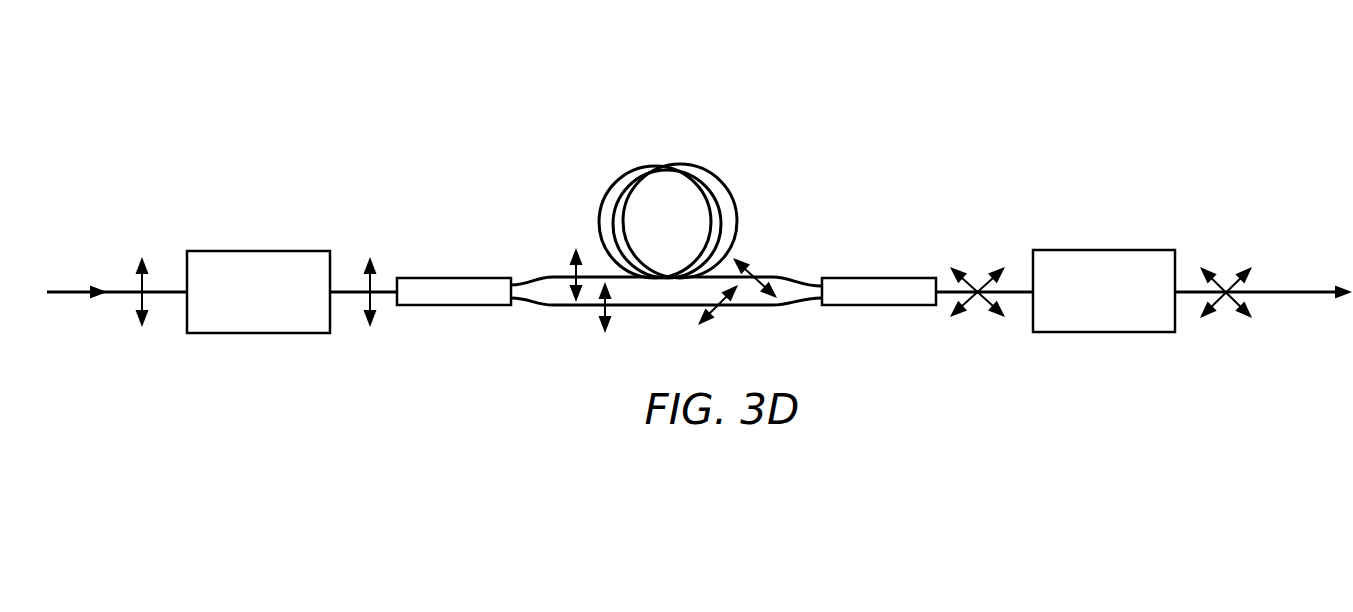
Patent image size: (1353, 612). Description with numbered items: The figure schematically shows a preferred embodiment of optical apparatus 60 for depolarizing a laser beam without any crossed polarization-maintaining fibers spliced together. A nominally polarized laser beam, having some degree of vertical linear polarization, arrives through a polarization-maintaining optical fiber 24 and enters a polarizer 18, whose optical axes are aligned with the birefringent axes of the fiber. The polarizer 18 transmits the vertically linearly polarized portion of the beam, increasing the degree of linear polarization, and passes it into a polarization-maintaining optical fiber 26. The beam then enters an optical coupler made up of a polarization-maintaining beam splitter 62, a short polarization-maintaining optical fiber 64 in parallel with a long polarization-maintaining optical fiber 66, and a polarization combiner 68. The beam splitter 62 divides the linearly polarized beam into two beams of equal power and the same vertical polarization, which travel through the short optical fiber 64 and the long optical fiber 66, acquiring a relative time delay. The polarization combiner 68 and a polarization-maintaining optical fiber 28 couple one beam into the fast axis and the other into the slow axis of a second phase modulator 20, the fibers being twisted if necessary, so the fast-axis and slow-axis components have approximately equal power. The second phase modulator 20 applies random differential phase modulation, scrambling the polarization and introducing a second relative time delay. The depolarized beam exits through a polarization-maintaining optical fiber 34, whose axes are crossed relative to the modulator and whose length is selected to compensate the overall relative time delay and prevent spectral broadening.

The optical apparatus 60 is at (412, 110).
The polarization-maintaining optical fiber 24 is at (67, 288).
The polarizer 18 is at (232, 257).
The polarization-maintaining optical fiber 26 is at (343, 287).
The polarization-maintaining beam splitter 62 is at (430, 282).
The short polarization-maintaining optical fiber 64 is at (667, 307).
The long polarization-maintaining optical fiber 66 is at (722, 177).
The polarization combiner 68 is at (903, 283).
The polarization-maintaining optical fiber 28 is at (1020, 287).
The second phase modulator 20 is at (1140, 257).
The polarization-maintaining optical fiber 34 is at (1285, 287).